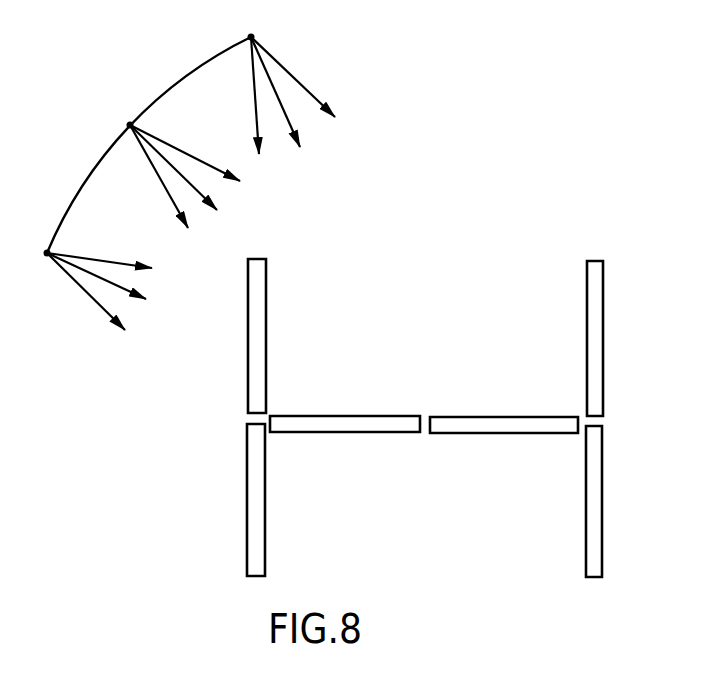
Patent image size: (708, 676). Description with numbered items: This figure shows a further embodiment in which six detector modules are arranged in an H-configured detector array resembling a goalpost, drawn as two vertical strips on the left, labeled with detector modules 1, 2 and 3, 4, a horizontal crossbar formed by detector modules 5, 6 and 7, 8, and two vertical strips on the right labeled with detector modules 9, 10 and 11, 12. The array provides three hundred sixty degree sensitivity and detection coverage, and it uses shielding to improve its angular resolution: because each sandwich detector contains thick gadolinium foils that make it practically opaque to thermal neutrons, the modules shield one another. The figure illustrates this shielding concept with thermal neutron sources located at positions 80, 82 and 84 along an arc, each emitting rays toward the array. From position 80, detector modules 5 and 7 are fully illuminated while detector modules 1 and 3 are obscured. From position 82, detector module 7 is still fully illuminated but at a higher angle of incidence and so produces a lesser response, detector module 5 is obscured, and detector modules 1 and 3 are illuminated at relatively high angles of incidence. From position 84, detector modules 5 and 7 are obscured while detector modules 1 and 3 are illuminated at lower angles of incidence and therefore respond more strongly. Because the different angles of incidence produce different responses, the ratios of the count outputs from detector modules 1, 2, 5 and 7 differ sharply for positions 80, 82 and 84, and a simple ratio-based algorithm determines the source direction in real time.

The detector module 1 is at (237, 336).
The detector module 2 is at (276, 336).
The detector module 3 is at (238, 500).
The detector module 4 is at (275, 500).
The detector module 5 is at (345, 403).
The detector module 6 is at (345, 446).
The detector module 7 is at (504, 404).
The detector module 8 is at (504, 446).
The detector module 9 is at (574, 338).
The detector module 10 is at (618, 338).
The detector module 11 is at (573, 501).
The detector module 12 is at (618, 501).
The thermal neutron source position 80 is at (284, 81).
The thermal neutron source position 82 is at (165, 166).
The thermal neutron source position 84 is at (83, 285).